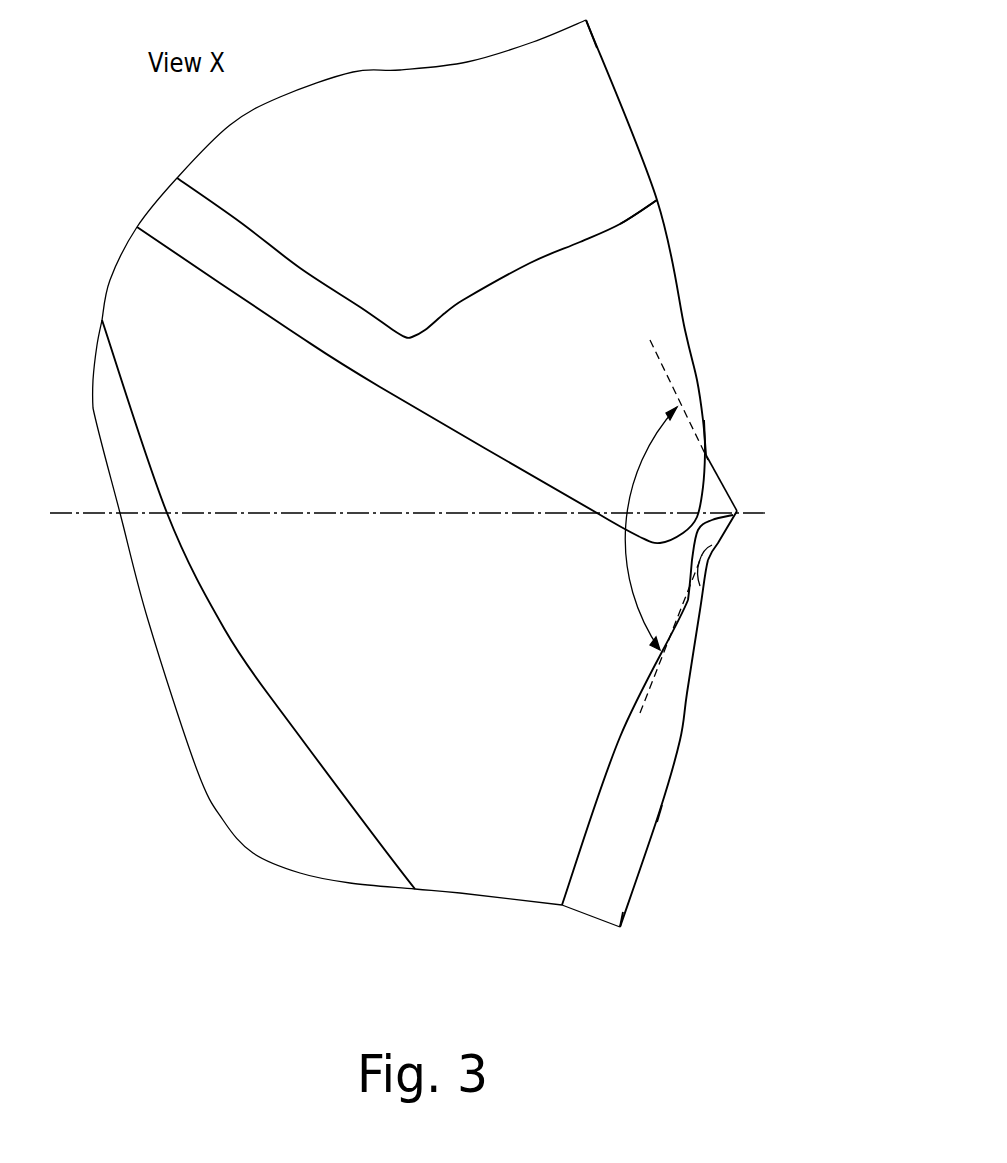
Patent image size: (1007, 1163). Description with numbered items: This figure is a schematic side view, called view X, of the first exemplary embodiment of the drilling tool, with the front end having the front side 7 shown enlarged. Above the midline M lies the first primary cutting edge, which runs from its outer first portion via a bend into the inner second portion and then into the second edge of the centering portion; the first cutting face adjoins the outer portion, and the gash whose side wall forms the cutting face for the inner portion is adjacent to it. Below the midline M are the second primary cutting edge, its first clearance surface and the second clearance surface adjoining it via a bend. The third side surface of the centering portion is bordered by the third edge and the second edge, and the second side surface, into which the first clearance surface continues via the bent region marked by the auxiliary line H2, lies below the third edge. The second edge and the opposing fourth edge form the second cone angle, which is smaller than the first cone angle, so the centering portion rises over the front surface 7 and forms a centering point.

The front side 7 is at (672, 270).
The auxiliary line H2 is at (687, 634).
The midline M is at (70, 513).